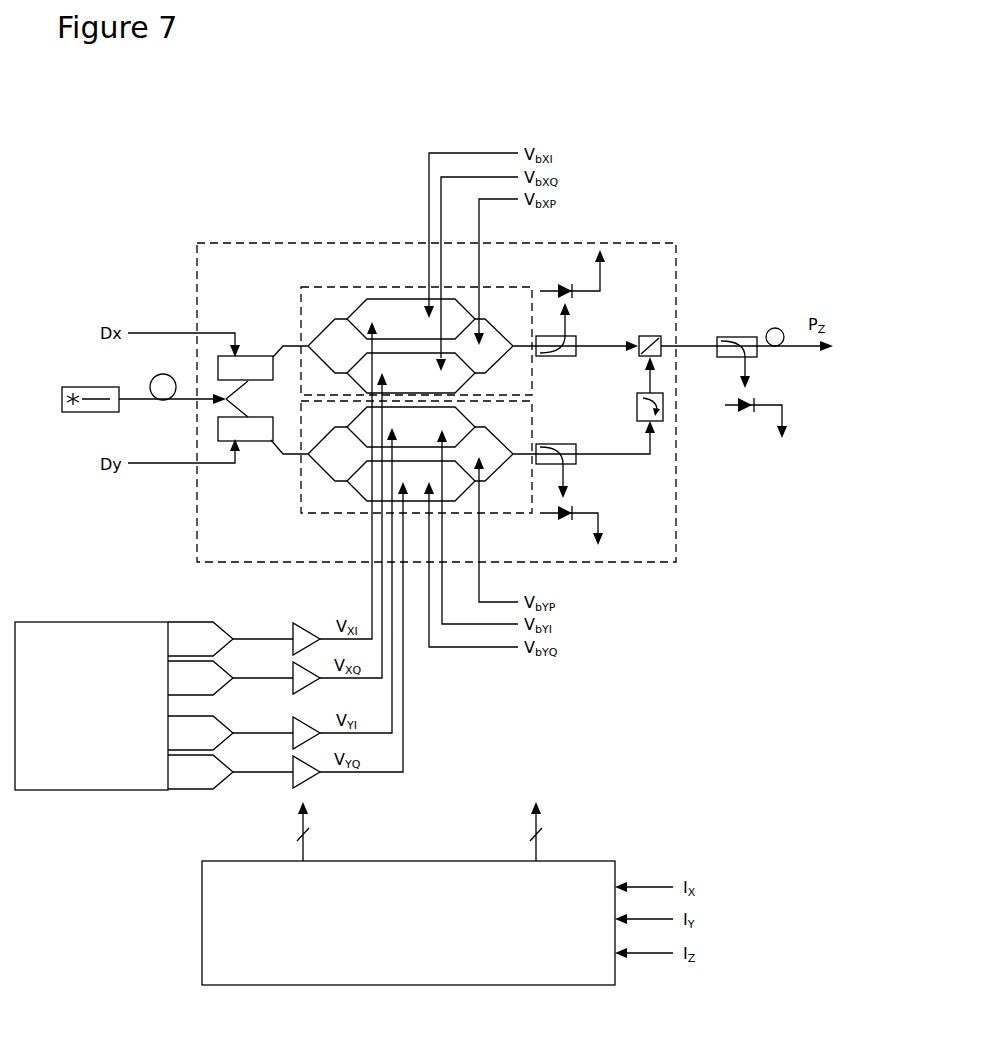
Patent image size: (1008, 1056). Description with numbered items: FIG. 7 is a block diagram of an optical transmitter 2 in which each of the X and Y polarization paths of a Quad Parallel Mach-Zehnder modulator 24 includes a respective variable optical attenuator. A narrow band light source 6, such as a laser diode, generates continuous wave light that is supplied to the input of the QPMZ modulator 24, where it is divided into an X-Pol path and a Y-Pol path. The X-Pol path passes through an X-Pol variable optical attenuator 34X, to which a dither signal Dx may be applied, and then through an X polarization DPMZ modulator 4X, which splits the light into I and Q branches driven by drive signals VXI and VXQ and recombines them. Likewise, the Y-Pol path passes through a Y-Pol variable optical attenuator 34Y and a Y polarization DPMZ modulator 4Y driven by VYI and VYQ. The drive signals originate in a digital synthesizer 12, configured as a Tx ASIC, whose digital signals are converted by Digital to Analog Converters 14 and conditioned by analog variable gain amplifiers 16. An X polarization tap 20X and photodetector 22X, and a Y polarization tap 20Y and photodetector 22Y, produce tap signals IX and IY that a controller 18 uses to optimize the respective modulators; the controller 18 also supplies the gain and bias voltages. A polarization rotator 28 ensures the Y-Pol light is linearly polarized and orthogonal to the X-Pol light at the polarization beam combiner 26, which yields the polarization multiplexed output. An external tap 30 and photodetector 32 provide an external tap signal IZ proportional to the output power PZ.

The optical transmitter 2 is at (132, 236).
The X polarization DPMZ modulator 4X is at (313, 287).
The Y polarization DPMZ modulator 4Y is at (325, 513).
The narrow band light source 6 is at (83, 387).
The digital synthesizer 12 is at (90, 622).
The Digital to Analog Converter 14 is at (198, 622).
The analog variable gain amplifier 16 is at (304, 622).
The controller 18 is at (210, 861).
The X polarization tap 20X is at (566, 356).
The Y polarization tap 20Y is at (565, 444).
The X polarization photodetector 22X is at (558, 287).
The Y polarization photodetector 22Y is at (560, 516).
The Quad Parallel Mach-Zehnder modulator 24 is at (345, 243).
The polarization beam combiner 26 is at (648, 336).
The polarization rotator 28 is at (663, 406).
The external tap 30 is at (728, 337).
The photodetector 32 is at (743, 412).
The X-Pol variable optical attenuator 34X is at (218, 370).
The Y-Pol variable optical attenuator 34Y is at (218, 428).